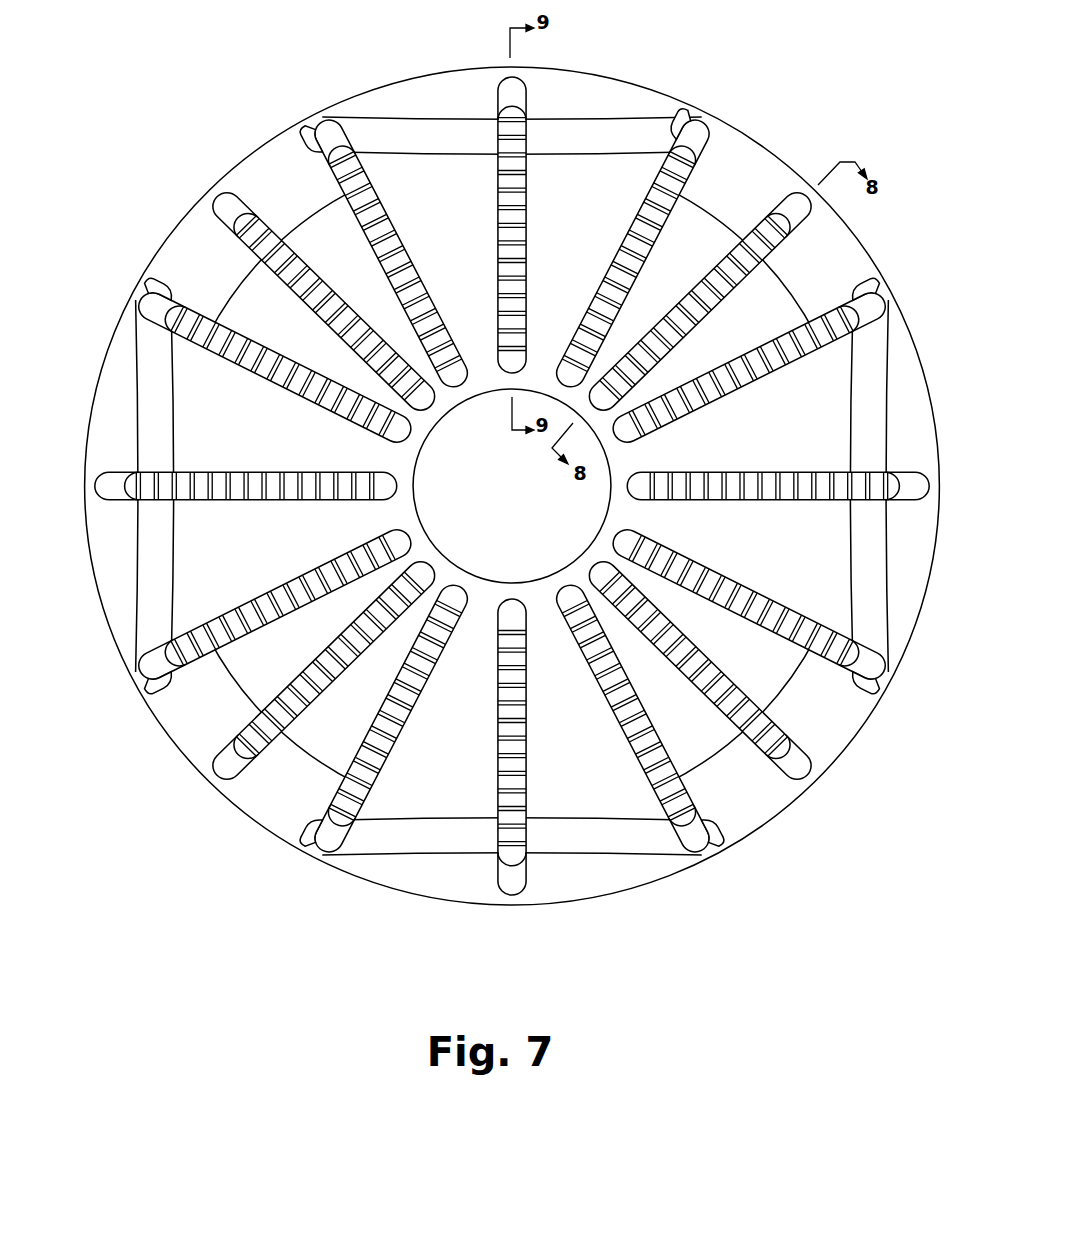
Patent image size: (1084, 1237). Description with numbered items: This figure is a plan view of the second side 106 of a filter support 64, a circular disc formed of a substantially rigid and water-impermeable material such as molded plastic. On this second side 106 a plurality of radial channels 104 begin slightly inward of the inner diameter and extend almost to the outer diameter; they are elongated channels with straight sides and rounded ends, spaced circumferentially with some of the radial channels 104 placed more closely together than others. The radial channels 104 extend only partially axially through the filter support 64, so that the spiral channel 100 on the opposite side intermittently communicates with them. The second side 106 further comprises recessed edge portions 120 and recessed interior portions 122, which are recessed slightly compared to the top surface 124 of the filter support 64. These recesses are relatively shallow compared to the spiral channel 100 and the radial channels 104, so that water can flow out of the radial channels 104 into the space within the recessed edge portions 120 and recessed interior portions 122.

The filter support 64 is at (205, 97).
The spiral channel 100 is at (238, 491).
The radial channels 104 is at (267, 250).
The second side 106 is at (193, 230).
The recessed edge portions 120 is at (300, 191).
The recessed interior portions 122 is at (439, 154).
The top surface 124 is at (607, 203).